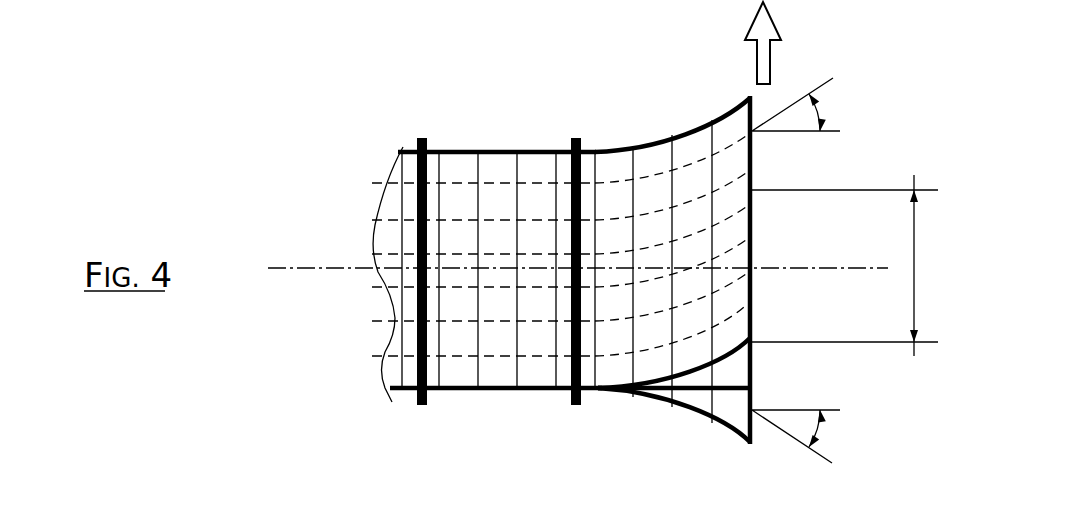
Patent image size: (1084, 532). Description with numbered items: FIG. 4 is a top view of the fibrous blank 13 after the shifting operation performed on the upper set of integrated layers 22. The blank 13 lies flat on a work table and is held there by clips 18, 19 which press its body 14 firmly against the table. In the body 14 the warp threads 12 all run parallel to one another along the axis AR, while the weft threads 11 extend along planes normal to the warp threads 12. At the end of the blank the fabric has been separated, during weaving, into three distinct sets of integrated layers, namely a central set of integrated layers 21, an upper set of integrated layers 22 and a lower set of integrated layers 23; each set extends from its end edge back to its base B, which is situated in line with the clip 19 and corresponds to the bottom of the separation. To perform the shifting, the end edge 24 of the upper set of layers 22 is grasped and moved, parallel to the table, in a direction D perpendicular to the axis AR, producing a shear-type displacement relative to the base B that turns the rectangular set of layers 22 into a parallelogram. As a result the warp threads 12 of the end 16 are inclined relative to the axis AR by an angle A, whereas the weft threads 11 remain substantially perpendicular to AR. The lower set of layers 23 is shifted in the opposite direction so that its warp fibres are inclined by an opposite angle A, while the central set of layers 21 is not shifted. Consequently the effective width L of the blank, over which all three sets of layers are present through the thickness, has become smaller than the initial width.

The fibrous blank 13 is at (322, 154).
The clip 18 is at (424, 138).
The clip 19 is at (578, 138).
The weft threads 11 is at (712, 120).
The warp threads 12 is at (738, 276).
The end edge 24 is at (755, 157).
The body 14 is at (482, 408).
The central set of integrated layers 21 is at (752, 378).
The end 16 is at (715, 399).
The upper set of integrated layers 22 is at (740, 328).
The lower set of integrated layers 23 is at (745, 448).
The base B is at (584, 408).
The axis AR is at (310, 270).
The direction D is at (757, 60).
The angle A is at (822, 110).
The effective width L is at (915, 240).